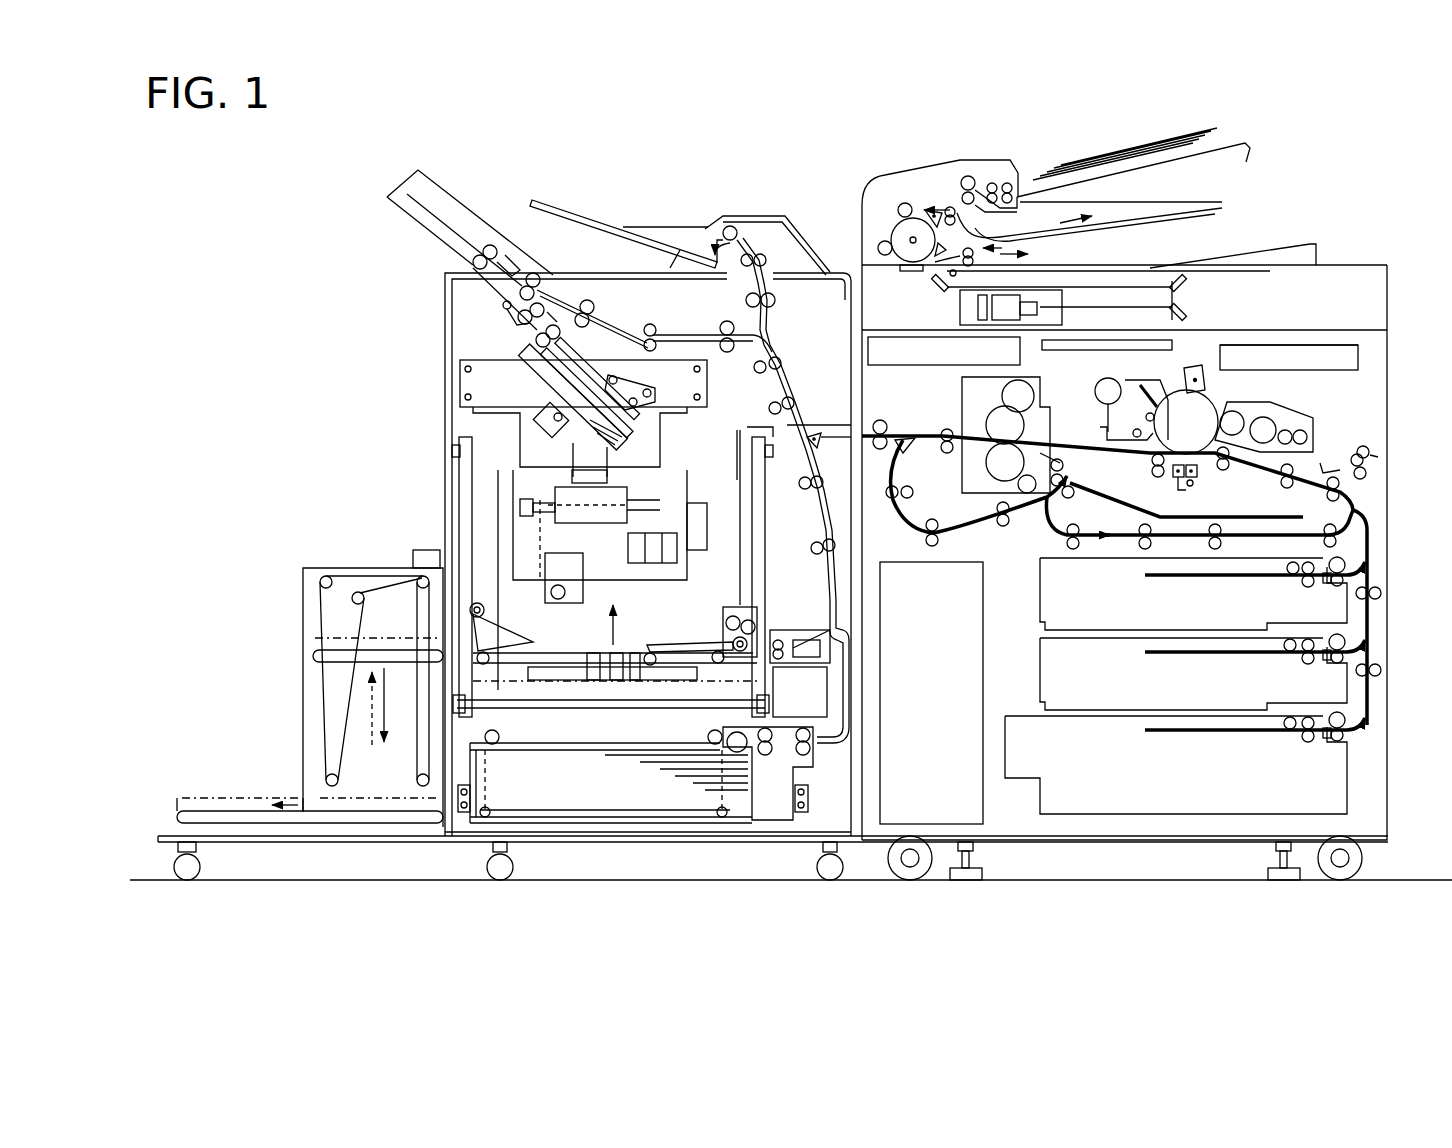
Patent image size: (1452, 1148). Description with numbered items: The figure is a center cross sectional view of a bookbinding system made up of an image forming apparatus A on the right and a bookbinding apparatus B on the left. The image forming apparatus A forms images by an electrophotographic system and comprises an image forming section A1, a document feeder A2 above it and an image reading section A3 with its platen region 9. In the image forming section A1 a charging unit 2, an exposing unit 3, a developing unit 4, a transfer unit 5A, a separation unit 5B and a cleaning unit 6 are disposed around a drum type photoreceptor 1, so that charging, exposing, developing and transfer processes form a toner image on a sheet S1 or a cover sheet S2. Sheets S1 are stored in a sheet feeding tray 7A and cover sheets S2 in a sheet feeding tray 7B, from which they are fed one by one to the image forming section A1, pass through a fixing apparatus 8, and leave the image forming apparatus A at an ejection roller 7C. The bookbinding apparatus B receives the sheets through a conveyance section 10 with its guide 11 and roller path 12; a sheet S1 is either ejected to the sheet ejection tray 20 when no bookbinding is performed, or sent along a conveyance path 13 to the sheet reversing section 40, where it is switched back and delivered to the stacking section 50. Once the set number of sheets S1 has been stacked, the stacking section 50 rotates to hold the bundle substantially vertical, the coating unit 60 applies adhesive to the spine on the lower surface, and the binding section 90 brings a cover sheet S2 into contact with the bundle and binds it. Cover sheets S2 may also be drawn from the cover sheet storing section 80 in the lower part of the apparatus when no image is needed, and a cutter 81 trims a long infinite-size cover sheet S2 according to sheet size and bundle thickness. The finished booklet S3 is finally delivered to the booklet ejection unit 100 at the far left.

The photoreceptor 1 is at (1218, 402).
The charging unit 2 is at (1188, 370).
The exposing unit 3 is at (1297, 353).
The developing unit 4 is at (1290, 412).
The transfer unit 5A is at (1196, 477).
The separation unit 5B is at (1180, 492).
The cleaning unit 6 is at (1107, 425).
The sheet feeding tray 7A is at (1338, 608).
The sheet feeding tray 7B is at (1342, 765).
The ejection roller 7C is at (880, 421).
The fixing apparatus 8 is at (1042, 393).
The platen glass 9 is at (1157, 265).
The conveyance section 10 is at (813, 392).
The conveyance path 11 is at (752, 320).
The conveyance rollers 12 is at (757, 238).
The conveyance path 13 is at (708, 343).
The sheet ejection tray 20 is at (663, 221).
The sheet reversing section 40 is at (477, 201).
The stacking section 50 is at (516, 377).
The coating unit 60 is at (632, 478).
The cover sheet storing section 80 is at (628, 832).
The cutter 81 is at (823, 767).
The binding section 90 is at (632, 640).
The booklet ejection unit 100 is at (402, 523).
The image forming apparatus A is at (1394, 309).
The image forming section A1 is at (1387, 367).
The document feeder A2 is at (1223, 150).
The image reading section A3 is at (1007, 297).
The bookbinding apparatus B is at (758, 203).
The sheet S1 is at (548, 370).
The cover sheet S2 is at (550, 783).
The booklet S3 is at (373, 637).